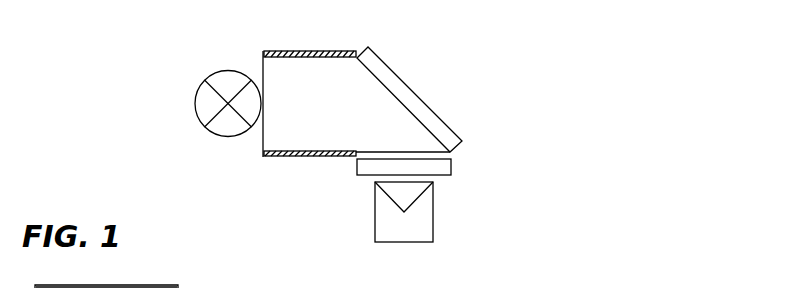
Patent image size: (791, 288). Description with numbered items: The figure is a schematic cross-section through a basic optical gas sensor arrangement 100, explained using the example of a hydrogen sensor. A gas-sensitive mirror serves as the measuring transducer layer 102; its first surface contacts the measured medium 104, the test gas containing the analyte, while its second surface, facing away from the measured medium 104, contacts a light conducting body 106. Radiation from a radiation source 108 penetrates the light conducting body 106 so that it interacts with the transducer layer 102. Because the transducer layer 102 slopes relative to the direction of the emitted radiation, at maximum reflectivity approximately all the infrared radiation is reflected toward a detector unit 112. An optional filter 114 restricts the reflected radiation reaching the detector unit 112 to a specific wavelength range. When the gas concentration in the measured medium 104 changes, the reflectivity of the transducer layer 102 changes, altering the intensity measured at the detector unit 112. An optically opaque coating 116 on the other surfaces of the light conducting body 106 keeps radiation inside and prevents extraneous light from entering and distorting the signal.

The sensor arrangement 100 is at (565, 119).
The measuring transducer layer 102 is at (440, 118).
The measured medium 104 is at (535, 127).
The light conducting body 106 is at (323, 135).
The radiation source 108 is at (196, 102).
The detector unit 112 is at (375, 237).
The filter 114 is at (452, 167).
The optically opaque coating 116 is at (287, 51).